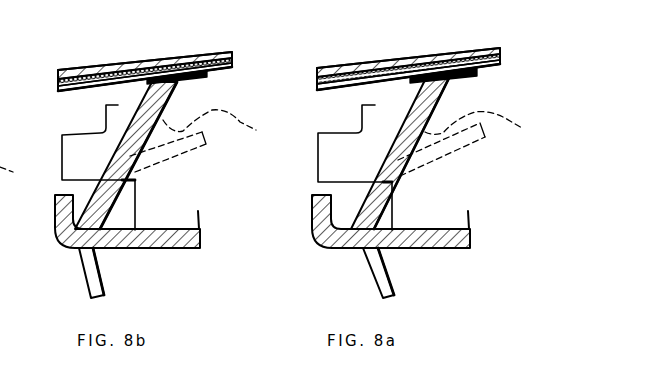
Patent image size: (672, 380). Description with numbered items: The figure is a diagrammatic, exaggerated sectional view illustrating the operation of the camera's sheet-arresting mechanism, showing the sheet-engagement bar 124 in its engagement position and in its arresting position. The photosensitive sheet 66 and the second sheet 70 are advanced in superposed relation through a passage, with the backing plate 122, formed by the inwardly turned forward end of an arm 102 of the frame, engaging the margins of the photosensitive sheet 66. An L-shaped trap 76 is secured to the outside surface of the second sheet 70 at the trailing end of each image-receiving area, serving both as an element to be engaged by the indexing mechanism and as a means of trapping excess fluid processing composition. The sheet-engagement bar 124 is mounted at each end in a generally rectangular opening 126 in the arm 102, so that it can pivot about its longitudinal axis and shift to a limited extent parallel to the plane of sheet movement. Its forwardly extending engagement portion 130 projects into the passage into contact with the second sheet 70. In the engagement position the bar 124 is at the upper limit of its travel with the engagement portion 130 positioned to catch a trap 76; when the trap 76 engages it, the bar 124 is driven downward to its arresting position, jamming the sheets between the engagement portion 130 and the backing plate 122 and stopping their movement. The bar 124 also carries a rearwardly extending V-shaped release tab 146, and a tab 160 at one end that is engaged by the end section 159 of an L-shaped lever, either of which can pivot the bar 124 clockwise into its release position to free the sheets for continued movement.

In FIG. 8B, the photosensitive sheet 66 is at (58, 80).
In FIG. 8A, the photosensitive sheet 66 is at (317, 82).
In FIG. 8B, the second sheet 70 is at (58, 88).
In FIG. 8A, the second sheet 70 is at (317, 89).
In FIG. 8B, the L-shaped trap 76 is at (200, 80).
In FIG. 8A, the L-shaped trap 76 is at (468, 80).
In FIG. 8B, the arm 102 is at (46, 225).
In FIG. 8A, the arm 102 is at (304, 225).
In FIG. 8B, the backing plate 122 is at (116, 59).
In FIG. 8A, the backing plate 122 is at (365, 60).
In FIG. 8B, the sheet-engagement bar 124 is at (119, 142).
In FIG. 8A, the sheet-engagement bar 124 is at (396, 138).
In FIG. 8B, the rectangular opening 126 is at (80, 192).
In FIG. 8A, the rectangular opening 126 is at (345, 197).
In FIG. 8B, the engagement portion 130 is at (153, 79).
In FIG. 8A, the engagement portion 130 is at (418, 79).
In FIG. 8B, the release tab 146 is at (88, 285).
In FIG. 8A, the release tab 146 is at (377, 285).
In FIG. 8B, the end section 159 is at (243, 121).
In FIG. 8A, the end section 159 is at (508, 121).
In FIG. 8B, the tab 160 is at (163, 155).
In FIG. 8A, the tab 160 is at (442, 155).